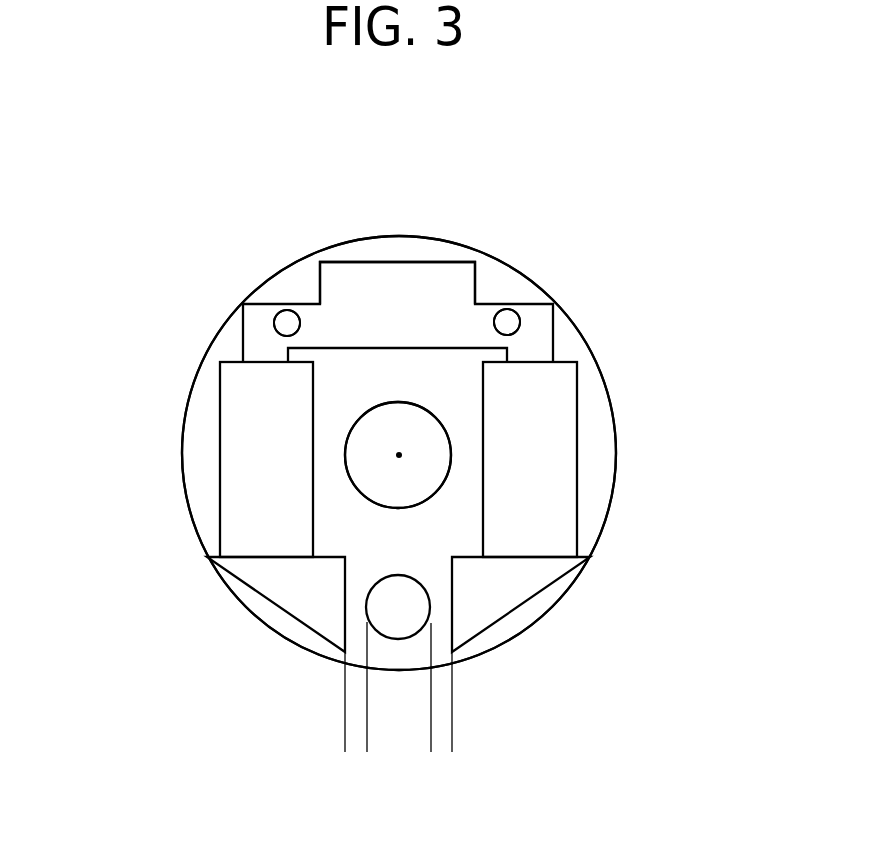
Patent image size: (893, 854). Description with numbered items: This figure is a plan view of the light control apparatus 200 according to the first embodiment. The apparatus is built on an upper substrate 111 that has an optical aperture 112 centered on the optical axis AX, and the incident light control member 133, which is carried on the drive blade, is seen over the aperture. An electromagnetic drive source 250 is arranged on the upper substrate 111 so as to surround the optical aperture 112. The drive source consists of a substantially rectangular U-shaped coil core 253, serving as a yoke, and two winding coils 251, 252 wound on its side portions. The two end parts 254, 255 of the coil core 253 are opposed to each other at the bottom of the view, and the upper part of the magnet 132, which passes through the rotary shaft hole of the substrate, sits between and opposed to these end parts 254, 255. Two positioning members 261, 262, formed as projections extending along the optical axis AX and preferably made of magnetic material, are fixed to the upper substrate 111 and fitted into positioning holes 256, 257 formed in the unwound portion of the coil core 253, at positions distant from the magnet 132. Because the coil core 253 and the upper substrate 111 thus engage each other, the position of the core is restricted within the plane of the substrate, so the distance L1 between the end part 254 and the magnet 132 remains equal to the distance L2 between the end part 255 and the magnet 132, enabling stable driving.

The light control apparatus 200 is at (427, 845).
The upper substrate 111 is at (198, 472).
The optical aperture 112 is at (353, 481).
The magnet 132 is at (403, 623).
The incident light control member 133 is at (377, 443).
The electromagnetic drive source 250 is at (426, 227).
The winding coil 251 is at (242, 426).
The winding coil 252 is at (553, 423).
The coil core 253 is at (399, 277).
The end part 254 is at (281, 611).
The end part 255 is at (517, 610).
The positioning hole 256 is at (274, 327).
The positioning hole 257 is at (520, 323).
The positioning member 261 is at (287, 312).
The positioning member 262 is at (507, 310).
The optical axis AX is at (401, 455).
The distance L1 is at (387, 745).
The distance L2 is at (480, 745).